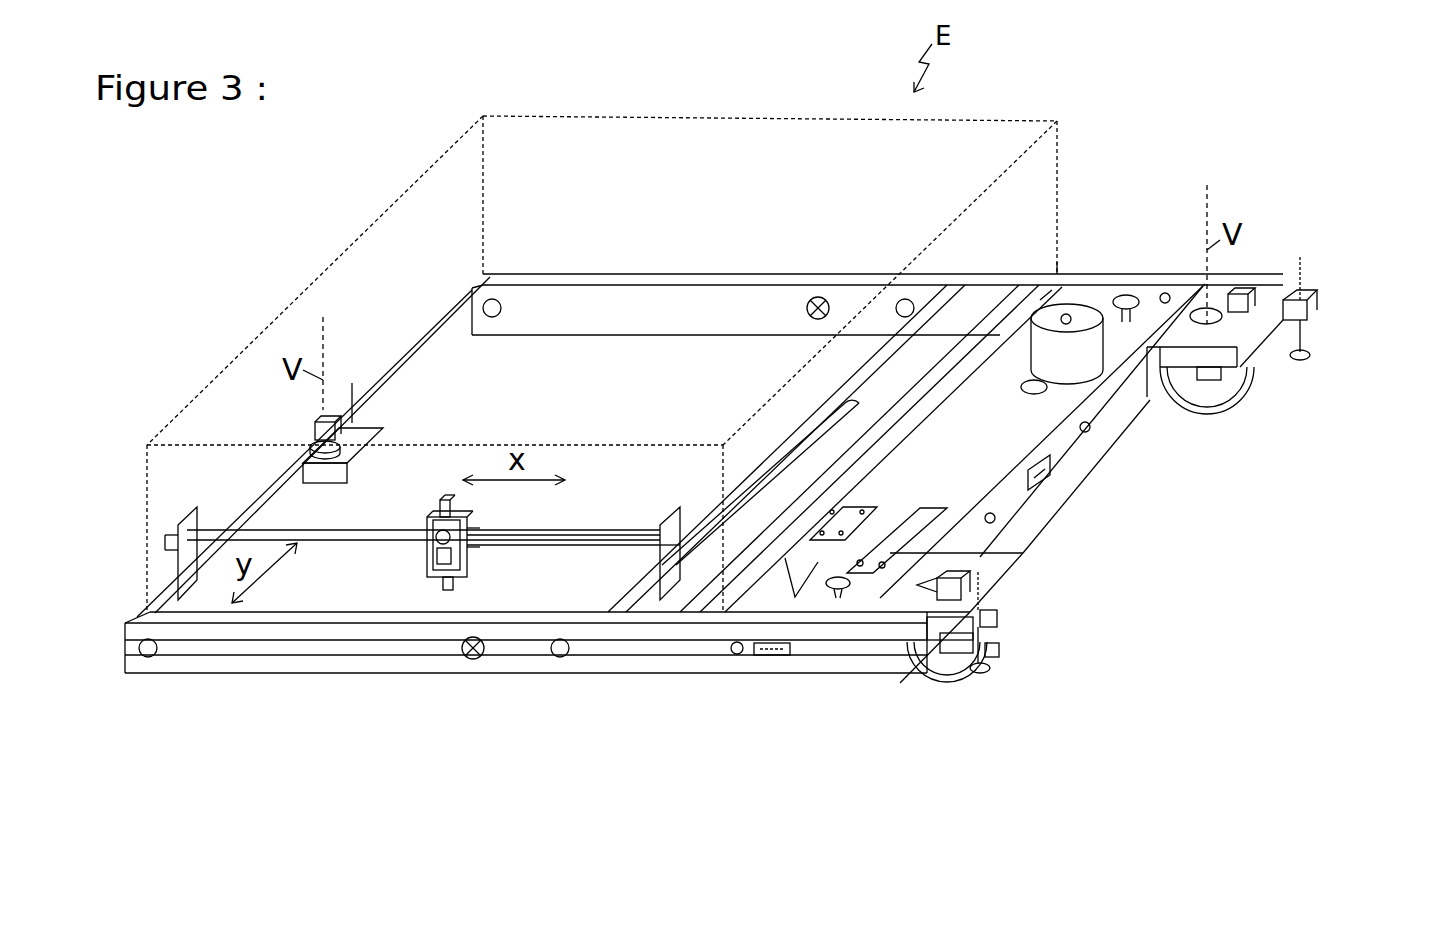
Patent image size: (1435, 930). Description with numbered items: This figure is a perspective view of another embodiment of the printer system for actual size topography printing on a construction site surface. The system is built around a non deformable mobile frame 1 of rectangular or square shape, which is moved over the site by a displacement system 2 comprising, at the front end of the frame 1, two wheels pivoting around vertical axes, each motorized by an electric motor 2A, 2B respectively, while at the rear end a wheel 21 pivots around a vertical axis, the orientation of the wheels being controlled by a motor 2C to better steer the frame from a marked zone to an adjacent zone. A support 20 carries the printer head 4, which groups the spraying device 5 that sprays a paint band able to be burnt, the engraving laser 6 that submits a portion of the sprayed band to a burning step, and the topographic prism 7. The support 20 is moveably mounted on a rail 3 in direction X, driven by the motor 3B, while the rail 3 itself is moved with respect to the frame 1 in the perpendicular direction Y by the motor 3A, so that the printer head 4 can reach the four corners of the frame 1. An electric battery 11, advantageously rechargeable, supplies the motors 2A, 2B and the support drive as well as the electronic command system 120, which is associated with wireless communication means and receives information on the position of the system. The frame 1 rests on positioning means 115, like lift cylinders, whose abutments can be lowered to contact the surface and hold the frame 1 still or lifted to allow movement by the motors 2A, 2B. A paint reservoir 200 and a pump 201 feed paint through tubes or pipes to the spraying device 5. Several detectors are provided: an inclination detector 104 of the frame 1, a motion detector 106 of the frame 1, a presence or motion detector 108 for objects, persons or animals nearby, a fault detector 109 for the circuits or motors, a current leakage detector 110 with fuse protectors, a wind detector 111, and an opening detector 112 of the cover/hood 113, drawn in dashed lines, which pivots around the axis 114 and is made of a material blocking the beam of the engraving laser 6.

The non deformable mobile frame 1 is at (373, 642).
The displacement system 2 is at (1247, 397).
The electric motor 2A is at (952, 678).
The electric motor 2B is at (1250, 367).
The motor 2C is at (313, 428).
The rail 3 is at (556, 530).
The electric motor 3A is at (177, 548).
The motor 3B is at (443, 503).
The printer head 4 is at (423, 557).
The spraying device 5 is at (460, 570).
The engraving laser 6 is at (473, 533).
The topographic prism 7 is at (446, 512).
The electric battery 11 is at (945, 547).
The support 20 is at (423, 517).
The wheel 21 is at (298, 482).
The inclination detector 104 is at (1043, 477).
The motion detector 106 is at (733, 653).
The presence or motion detector 108 is at (716, 484).
The fault detector 109 is at (647, 620).
The current leakage detector 110 is at (1167, 290).
The wind detector 111 is at (805, 300).
The opening detector 112 is at (1047, 297).
The cover/hood 113 is at (752, 118).
The axis 114 is at (1018, 305).
The positioning means 115 is at (313, 407).
The electronic command system 120 is at (840, 598).
The paint reservoir 200 is at (1087, 353).
The pump 201 is at (1050, 390).